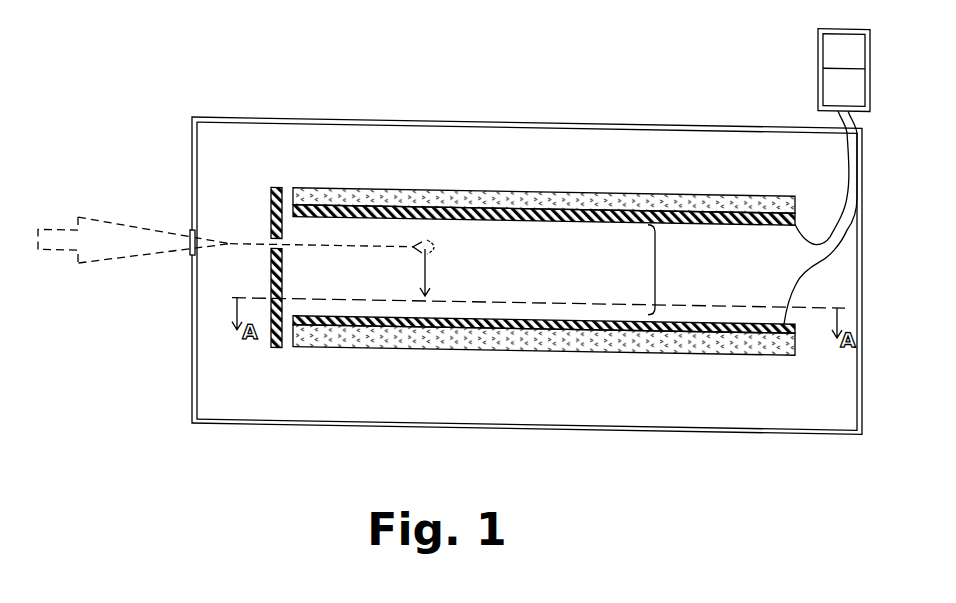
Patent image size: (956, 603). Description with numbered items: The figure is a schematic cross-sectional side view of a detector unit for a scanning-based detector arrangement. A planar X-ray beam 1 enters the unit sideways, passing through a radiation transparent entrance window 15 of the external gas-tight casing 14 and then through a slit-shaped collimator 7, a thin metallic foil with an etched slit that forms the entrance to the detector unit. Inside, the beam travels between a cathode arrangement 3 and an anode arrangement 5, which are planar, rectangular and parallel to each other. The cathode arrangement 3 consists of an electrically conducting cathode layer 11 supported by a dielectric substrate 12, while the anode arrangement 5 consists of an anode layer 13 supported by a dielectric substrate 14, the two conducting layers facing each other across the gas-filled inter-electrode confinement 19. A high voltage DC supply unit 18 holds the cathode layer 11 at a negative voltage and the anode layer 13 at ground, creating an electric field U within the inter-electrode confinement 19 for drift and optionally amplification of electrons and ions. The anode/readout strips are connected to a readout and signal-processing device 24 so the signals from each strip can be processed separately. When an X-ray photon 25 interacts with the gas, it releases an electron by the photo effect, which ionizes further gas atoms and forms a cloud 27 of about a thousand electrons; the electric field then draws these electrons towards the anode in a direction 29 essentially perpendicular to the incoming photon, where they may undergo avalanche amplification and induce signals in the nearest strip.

The planar X-ray beam 1 is at (110, 219).
The cathode arrangement 3 is at (560, 203).
The anode arrangement 5 is at (560, 316).
The slit-shaped collimator 7 is at (277, 186).
The cathode layer 11 is at (723, 215).
The dielectric substrate 12 is at (640, 186).
The anode layer 13 is at (718, 313).
The dielectric substrate 14 is at (425, 116).
The radiation transparent entrance window 15 is at (190, 233).
The high voltage DC supply unit 18 is at (818, 67).
The inter-electrode confinement 19 is at (540, 224).
The readout and signal-processing device 24 is at (818, 30).
The X-ray photon 25 is at (248, 247).
The electron cloud 27 is at (432, 240).
The direction of electron drift 29 is at (427, 259).